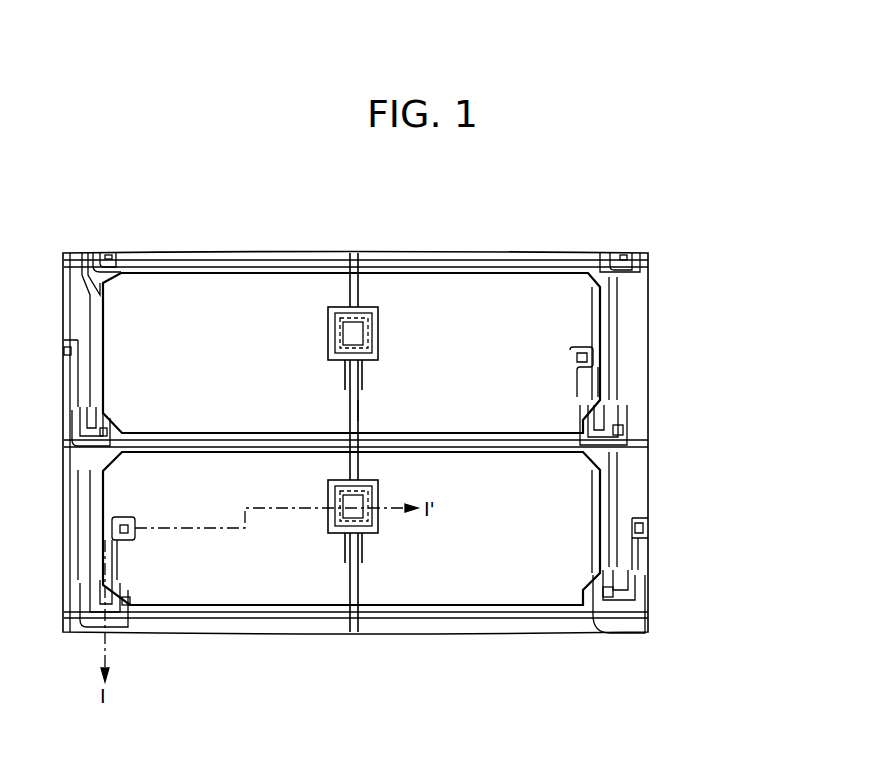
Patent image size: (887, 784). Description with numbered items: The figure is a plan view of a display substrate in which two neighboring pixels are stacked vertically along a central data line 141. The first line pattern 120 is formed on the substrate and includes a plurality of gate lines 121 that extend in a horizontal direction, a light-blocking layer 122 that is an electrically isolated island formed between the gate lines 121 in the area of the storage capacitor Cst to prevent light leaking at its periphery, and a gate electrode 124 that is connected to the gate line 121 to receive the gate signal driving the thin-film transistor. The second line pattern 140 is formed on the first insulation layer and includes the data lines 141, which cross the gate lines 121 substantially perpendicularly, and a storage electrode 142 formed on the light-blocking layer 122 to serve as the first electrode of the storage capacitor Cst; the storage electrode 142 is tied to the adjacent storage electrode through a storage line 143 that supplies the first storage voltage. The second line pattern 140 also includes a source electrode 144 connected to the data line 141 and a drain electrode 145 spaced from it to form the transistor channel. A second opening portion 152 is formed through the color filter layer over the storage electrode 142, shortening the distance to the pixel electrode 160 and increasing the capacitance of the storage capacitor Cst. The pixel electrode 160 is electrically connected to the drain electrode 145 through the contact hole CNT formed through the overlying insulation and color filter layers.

The first line pattern 120 is at (288, 703).
The gate line 121 is at (212, 620).
The light-blocking layer 122 is at (347, 557).
The gate electrode 124 is at (133, 634).
The second line pattern 140 is at (570, 467).
The data line 141 is at (608, 345).
The storage electrode 142 is at (377, 347).
The storage line 143 is at (358, 421).
The source electrode 144 is at (607, 440).
The drain electrode 145 is at (597, 378).
The second opening portion 152 is at (330, 332).
The pixel electrode 160 is at (468, 604).
The storage capacitor Cst is at (390, 317).
The contact hole CNT is at (124, 520).